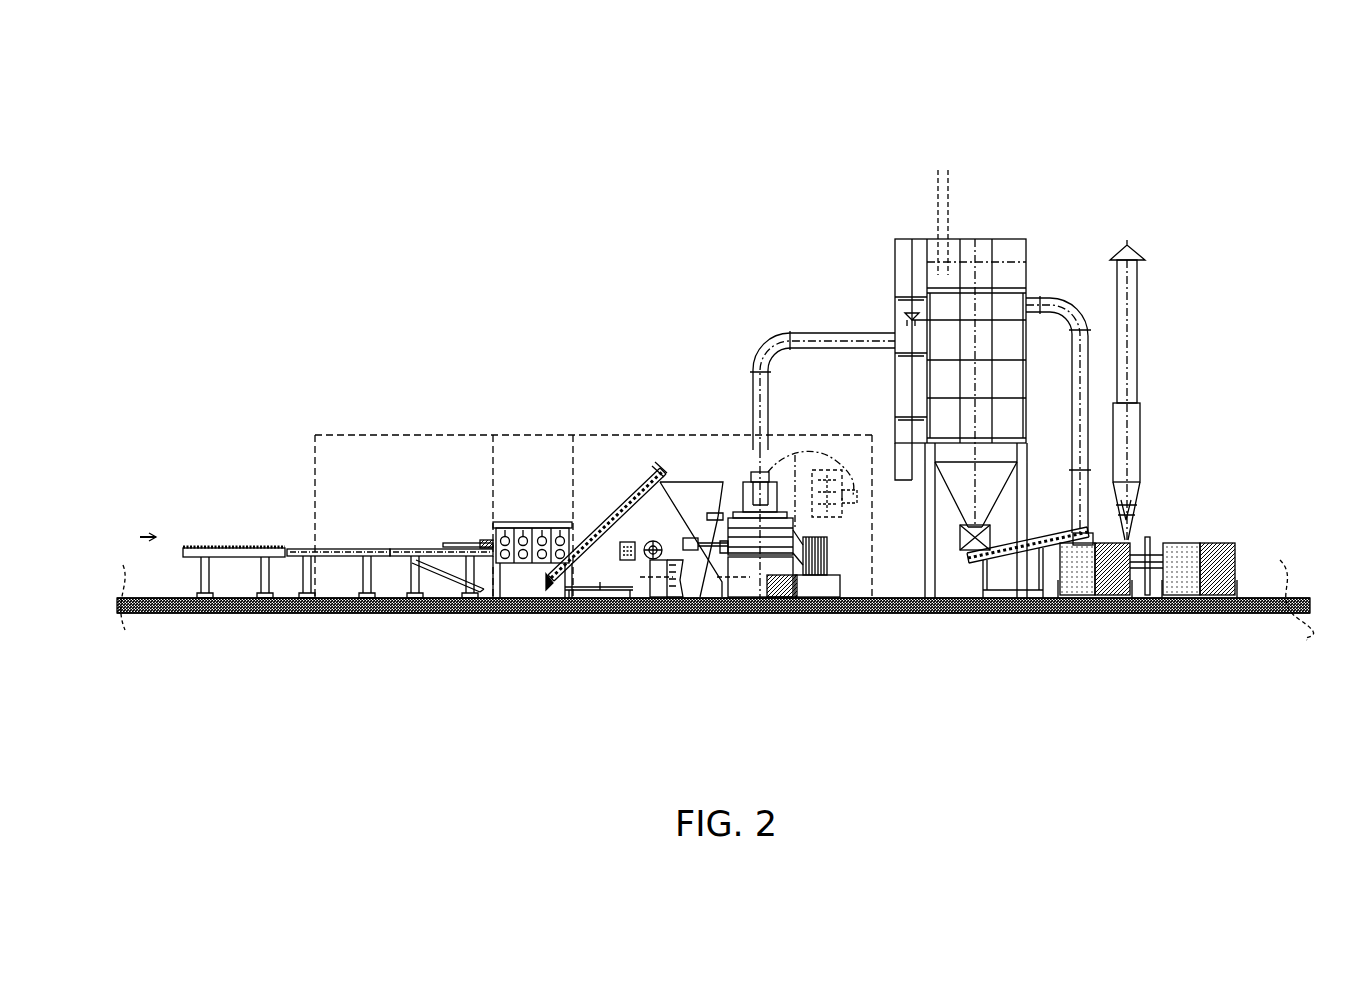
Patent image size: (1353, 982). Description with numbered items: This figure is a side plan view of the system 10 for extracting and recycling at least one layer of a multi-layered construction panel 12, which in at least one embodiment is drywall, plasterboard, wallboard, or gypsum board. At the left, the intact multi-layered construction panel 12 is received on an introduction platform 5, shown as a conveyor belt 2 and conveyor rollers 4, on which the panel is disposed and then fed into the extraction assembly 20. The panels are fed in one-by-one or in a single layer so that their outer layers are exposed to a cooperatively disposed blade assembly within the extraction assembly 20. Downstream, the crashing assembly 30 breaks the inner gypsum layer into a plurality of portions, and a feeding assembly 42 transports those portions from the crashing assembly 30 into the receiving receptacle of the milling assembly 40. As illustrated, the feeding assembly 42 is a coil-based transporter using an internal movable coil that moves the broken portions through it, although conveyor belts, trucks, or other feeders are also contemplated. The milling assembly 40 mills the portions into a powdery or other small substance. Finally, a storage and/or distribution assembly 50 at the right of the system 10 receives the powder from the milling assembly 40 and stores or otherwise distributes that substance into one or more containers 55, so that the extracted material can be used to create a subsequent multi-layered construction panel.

The system 10 is at (392, 167).
The conveyor belt 2 is at (347, 547).
The conveyor rollers 4 is at (197, 547).
The introduction platform 5 is at (273, 493).
The multi-layered construction panel 12 is at (470, 540).
The extraction assembly 20 is at (527, 510).
The crashing assembly 30 is at (560, 510).
The milling assembly 40 is at (717, 453).
The feeding assembly 42 is at (630, 490).
The storage and/or distribution assembly 50 is at (1040, 218).
The containers 55 is at (1207, 543).